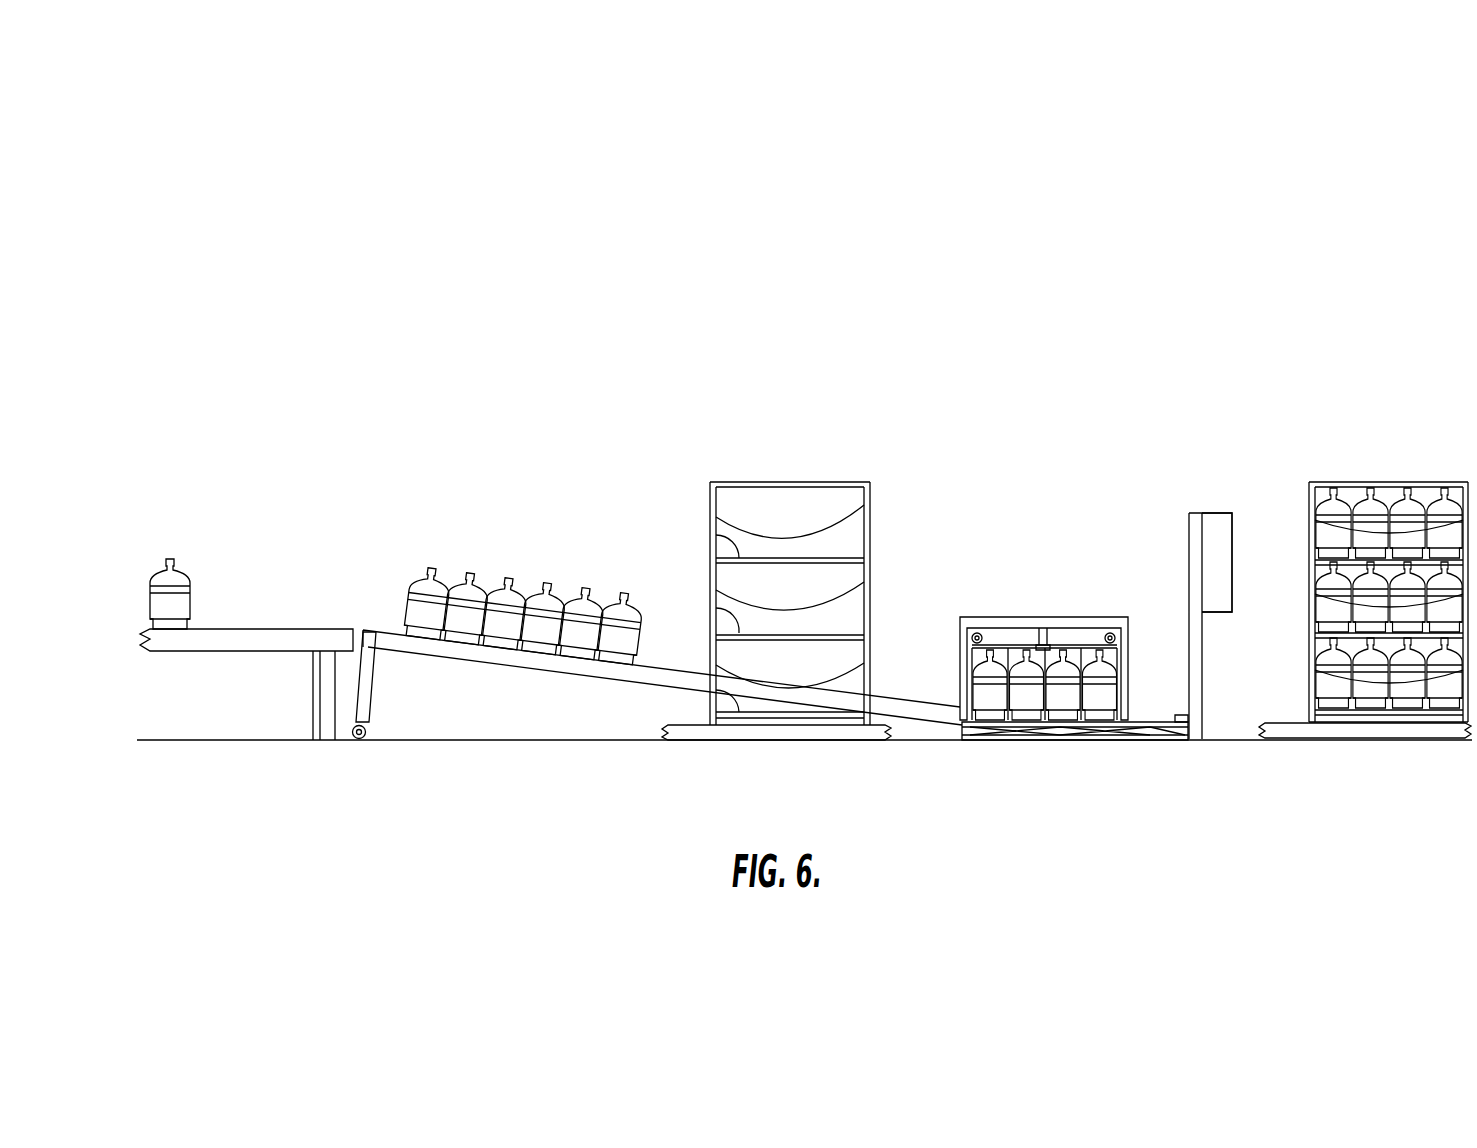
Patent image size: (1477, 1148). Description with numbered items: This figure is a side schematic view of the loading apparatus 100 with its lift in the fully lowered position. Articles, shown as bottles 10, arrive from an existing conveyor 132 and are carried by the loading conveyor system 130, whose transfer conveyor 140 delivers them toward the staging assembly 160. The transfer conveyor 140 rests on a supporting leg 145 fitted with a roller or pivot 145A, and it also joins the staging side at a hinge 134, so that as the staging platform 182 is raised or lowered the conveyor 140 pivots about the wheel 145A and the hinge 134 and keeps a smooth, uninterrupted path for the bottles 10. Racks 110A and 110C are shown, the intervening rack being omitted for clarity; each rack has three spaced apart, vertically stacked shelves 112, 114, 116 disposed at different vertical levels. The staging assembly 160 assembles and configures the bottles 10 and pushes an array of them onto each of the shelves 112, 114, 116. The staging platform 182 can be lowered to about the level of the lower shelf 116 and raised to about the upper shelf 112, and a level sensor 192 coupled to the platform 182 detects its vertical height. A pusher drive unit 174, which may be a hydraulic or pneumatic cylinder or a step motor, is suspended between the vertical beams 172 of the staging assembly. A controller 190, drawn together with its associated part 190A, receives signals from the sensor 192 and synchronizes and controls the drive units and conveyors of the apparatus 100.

The loading apparatus 100 is at (956, 336).
The bottles 10 is at (467, 574).
The rack 110A is at (828, 478).
The rack 110C is at (1421, 480).
The upper shelf 112 is at (736, 553).
The shelf 114 is at (735, 628).
The lower shelf 116 is at (716, 698).
The loading conveyor system 130 is at (364, 503).
The existing conveyor 132 is at (245, 640).
The hinge 134 is at (940, 692).
The transfer conveyor 140 is at (448, 680).
The supporting leg 145 is at (362, 693).
The roller or pivot 145A is at (357, 742).
The staging assembly 160 is at (1059, 670).
The vertical beam 172 is at (1133, 650).
The drive unit 174 is at (1043, 626).
The staging platform 182 is at (1050, 728).
The controller 190 is at (1213, 538).
The control panel 190A is at (1203, 648).
The level sensor 192 is at (1180, 714).